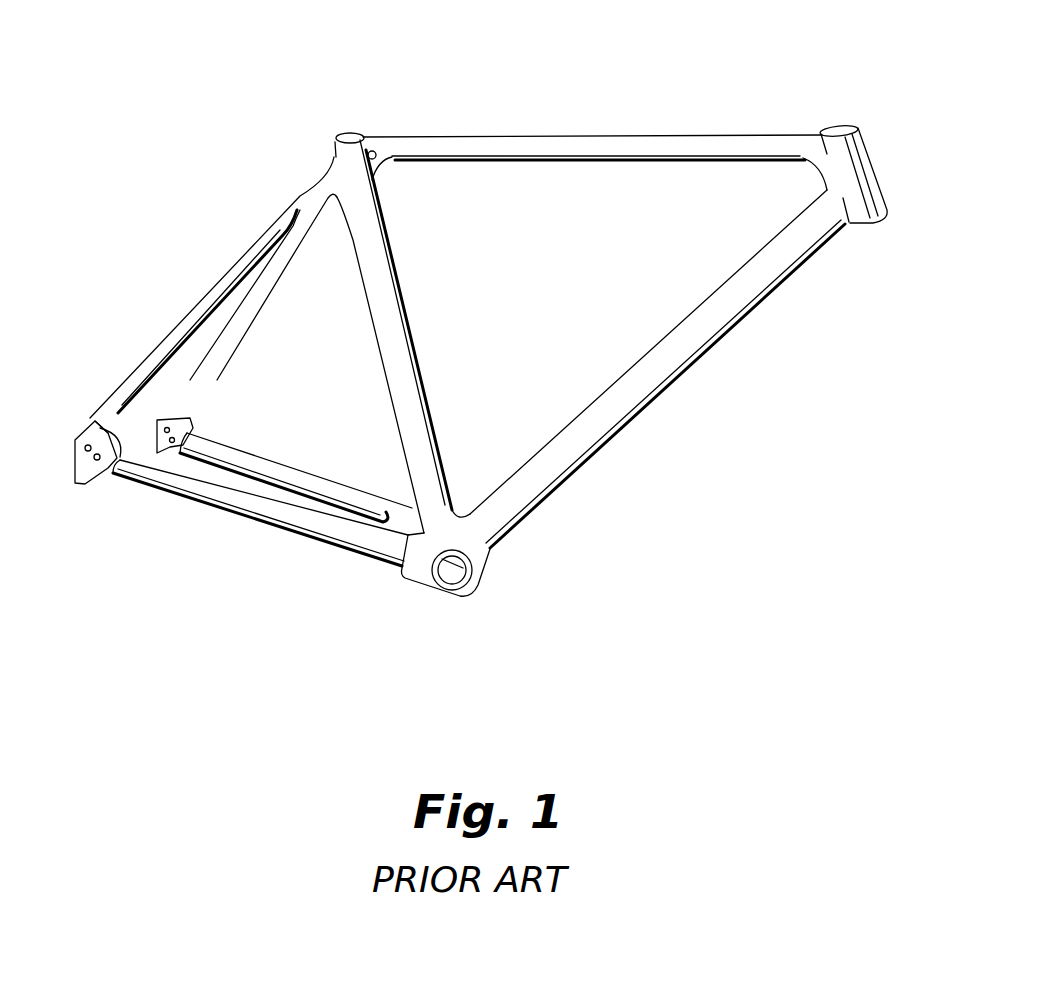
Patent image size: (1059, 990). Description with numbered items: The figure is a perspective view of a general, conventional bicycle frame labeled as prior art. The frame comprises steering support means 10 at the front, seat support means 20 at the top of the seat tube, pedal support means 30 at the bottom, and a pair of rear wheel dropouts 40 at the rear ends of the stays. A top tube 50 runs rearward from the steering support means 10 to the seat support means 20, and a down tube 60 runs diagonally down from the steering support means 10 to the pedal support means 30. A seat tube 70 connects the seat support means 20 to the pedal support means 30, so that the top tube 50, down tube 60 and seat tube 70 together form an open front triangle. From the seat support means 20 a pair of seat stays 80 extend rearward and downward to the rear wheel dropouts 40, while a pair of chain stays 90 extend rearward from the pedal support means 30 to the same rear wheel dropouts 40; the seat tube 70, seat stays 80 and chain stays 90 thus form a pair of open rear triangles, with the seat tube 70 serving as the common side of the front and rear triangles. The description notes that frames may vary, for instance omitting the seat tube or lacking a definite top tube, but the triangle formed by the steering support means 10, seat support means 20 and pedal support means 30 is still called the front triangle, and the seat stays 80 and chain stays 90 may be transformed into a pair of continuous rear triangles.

The steering support means 10 is at (871, 172).
The seat support means 20 is at (356, 133).
The pedal support means 30 is at (490, 556).
The rear wheel dropouts 40 is at (108, 462).
The top tube 50 is at (697, 135).
The down tube 60 is at (708, 337).
The seat tube 70 is at (404, 360).
The seat stays 80 is at (215, 282).
The chain stays 90 is at (290, 484).